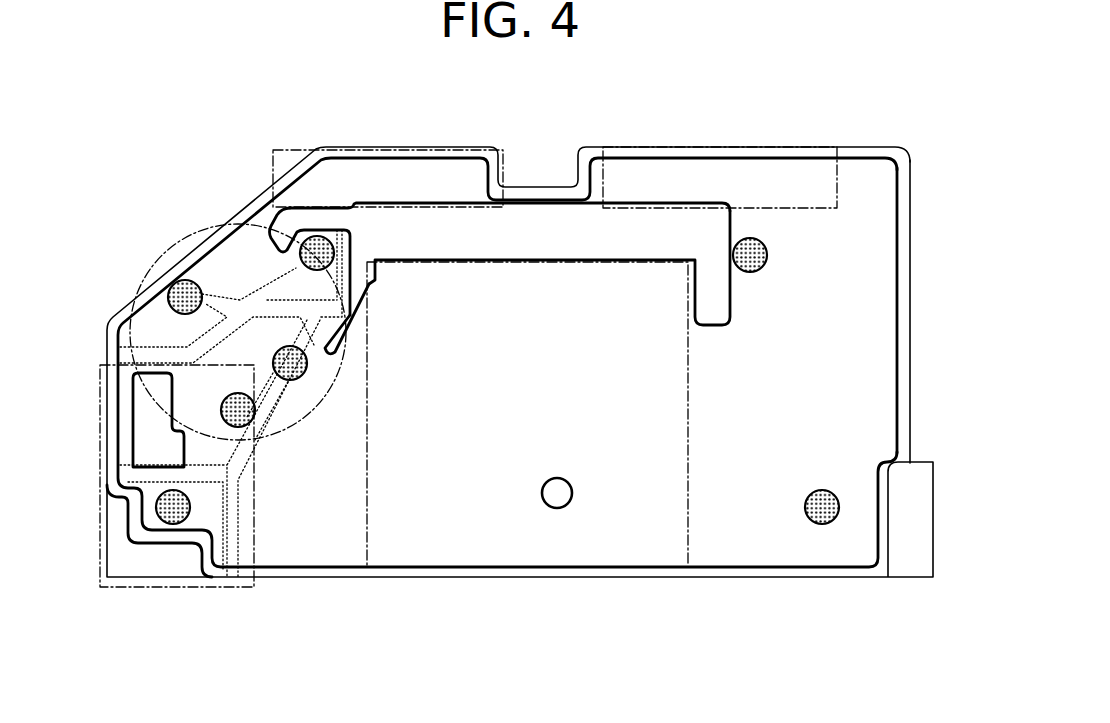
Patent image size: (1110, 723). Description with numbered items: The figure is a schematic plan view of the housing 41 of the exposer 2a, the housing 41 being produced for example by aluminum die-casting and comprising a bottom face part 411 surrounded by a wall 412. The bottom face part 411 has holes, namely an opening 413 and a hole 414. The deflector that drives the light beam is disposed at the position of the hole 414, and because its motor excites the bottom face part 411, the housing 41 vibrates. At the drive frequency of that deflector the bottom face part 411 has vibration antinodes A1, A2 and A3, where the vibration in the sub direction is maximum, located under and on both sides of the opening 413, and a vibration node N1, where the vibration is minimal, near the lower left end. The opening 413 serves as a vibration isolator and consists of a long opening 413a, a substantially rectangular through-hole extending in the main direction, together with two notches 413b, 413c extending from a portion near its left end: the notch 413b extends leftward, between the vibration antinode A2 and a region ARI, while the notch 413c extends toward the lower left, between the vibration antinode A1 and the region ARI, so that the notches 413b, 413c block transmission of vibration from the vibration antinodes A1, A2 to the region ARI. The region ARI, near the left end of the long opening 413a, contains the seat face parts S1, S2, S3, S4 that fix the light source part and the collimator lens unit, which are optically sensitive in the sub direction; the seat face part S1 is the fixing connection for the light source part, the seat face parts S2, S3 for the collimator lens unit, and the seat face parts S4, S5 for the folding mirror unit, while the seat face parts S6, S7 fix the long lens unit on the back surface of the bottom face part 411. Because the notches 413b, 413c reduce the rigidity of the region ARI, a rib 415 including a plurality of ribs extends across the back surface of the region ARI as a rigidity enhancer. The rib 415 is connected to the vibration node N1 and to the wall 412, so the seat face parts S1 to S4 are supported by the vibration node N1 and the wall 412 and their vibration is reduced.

The exposer 2a is at (866, 109).
The housing 41 is at (912, 167).
The bottom face part 411 is at (882, 225).
The wall 412 is at (904, 262).
The opening 413 is at (534, 199).
The long opening 413a is at (573, 222).
The notch 413b is at (277, 222).
The notch 413c is at (340, 343).
The hole 414 is at (563, 507).
The rib 415 is at (240, 523).
The region ARI is at (142, 332).
The vibration antinode A1 is at (691, 398).
The vibration antinode A2 is at (288, 150).
The vibration antinode A3 is at (748, 147).
The vibration node N1 is at (102, 493).
The seat face part S1 is at (183, 288).
The seat face part S2 is at (246, 418).
The seat face part S3 is at (296, 372).
The seat face part S4 is at (308, 262).
The seat face part S5 is at (766, 250).
The seat face part S6 is at (173, 524).
The seat face part S7 is at (823, 524).